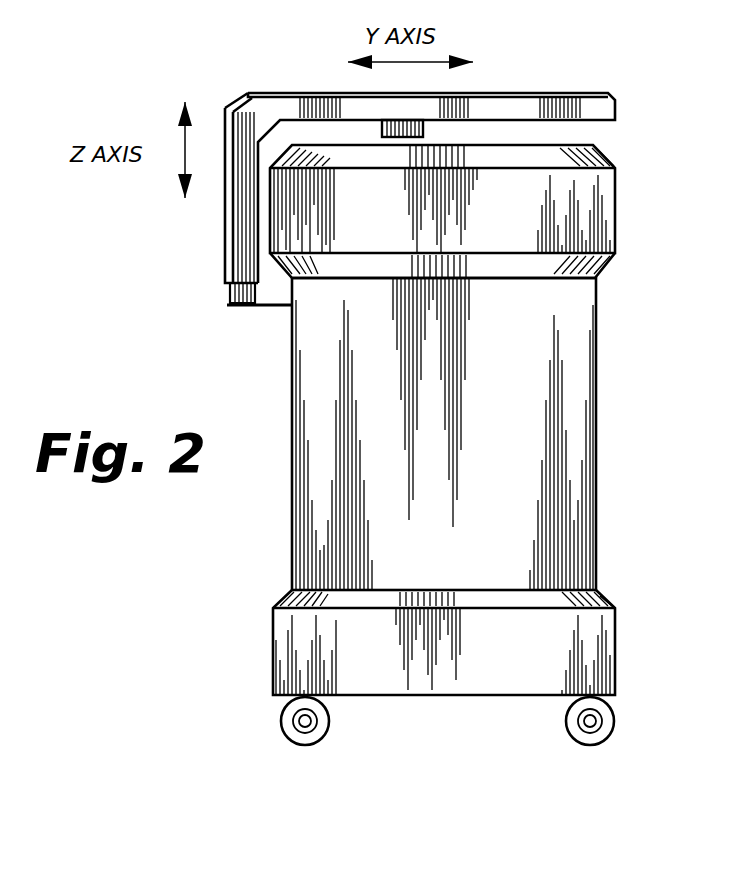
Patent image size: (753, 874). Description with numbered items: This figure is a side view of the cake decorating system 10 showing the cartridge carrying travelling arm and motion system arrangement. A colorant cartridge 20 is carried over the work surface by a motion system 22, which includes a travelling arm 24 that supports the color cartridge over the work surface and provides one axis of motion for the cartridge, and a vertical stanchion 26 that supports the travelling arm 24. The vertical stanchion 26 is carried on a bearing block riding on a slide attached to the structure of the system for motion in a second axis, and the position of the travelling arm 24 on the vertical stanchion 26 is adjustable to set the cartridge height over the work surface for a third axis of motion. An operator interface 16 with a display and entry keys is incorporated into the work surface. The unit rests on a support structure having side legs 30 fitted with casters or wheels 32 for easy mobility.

The cake decorating system 10 is at (615, 205).
The operator interface 16 is at (230, 292).
The colorant cartridge 20 is at (428, 131).
The motion system 22 is at (240, 100).
The travelling arm 24 is at (615, 104).
The vertical stanchion 26 is at (225, 218).
The side legs 30 is at (596, 438).
The casters or wheels 32 is at (617, 712).